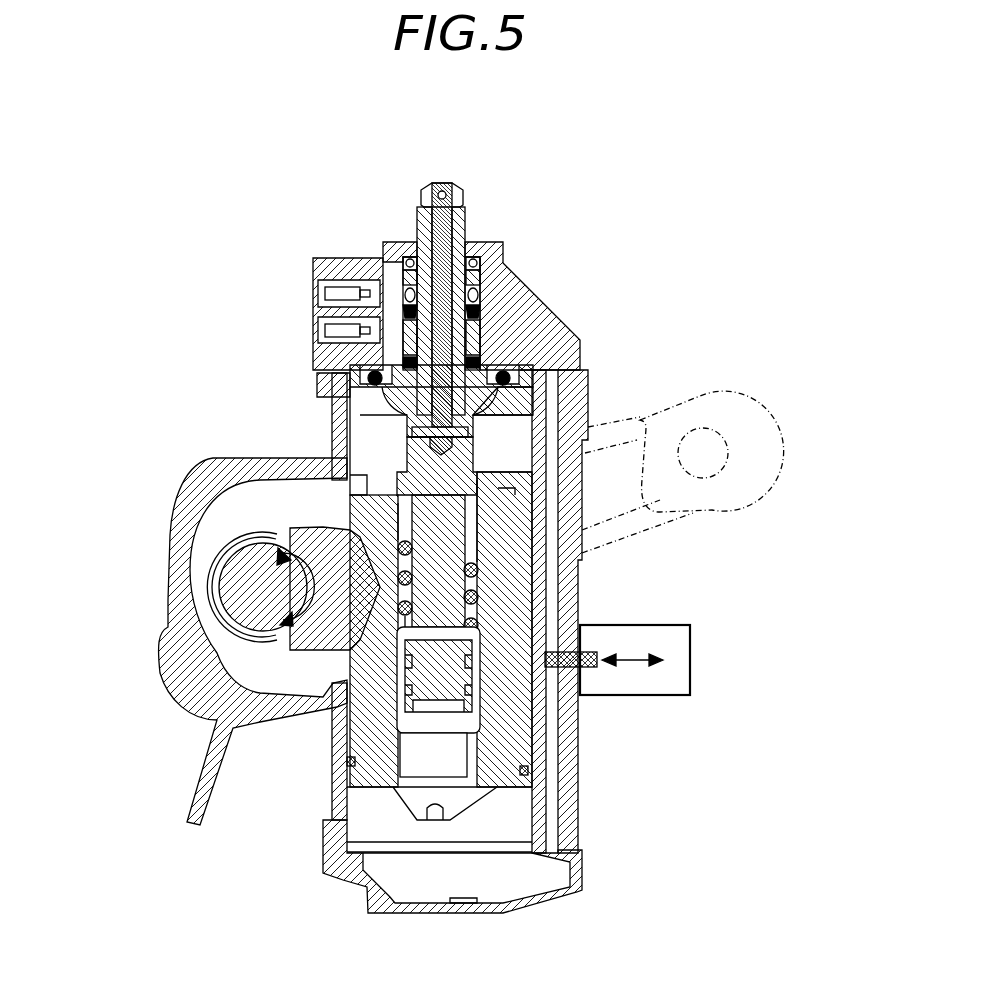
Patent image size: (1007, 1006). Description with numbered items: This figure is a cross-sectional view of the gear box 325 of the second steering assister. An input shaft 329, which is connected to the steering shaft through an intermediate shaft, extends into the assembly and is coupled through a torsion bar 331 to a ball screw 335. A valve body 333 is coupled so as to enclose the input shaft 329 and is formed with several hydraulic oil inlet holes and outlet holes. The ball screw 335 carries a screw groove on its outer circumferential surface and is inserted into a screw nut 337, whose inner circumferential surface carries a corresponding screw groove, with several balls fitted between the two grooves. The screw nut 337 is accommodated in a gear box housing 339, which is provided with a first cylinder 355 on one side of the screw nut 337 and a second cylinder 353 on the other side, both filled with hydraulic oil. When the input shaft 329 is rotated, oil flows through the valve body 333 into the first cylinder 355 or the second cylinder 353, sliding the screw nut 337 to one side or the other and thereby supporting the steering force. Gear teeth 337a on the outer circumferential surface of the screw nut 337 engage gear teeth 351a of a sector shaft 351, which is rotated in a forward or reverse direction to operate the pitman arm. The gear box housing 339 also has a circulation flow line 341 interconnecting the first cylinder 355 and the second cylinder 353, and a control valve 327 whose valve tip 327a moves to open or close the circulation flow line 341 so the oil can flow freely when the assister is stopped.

The steering gear assembly 325 is at (141, 163).
The control valve 327 is at (690, 665).
The valve tip 327a is at (585, 667).
The input shaft 329 is at (463, 194).
The torsion bar 331 is at (435, 227).
The valve body 333 is at (482, 352).
The ball screw 335 is at (478, 462).
The screw nut 337 is at (492, 571).
The gear teeth 337a is at (353, 530).
The gear box housing 339 is at (288, 463).
The circulation flow line 341 is at (550, 777).
The sector shaft 351 is at (240, 617).
The gear teeth 351a is at (372, 588).
The second cylinder 353 is at (370, 445).
The first cylinder 355 is at (372, 823).